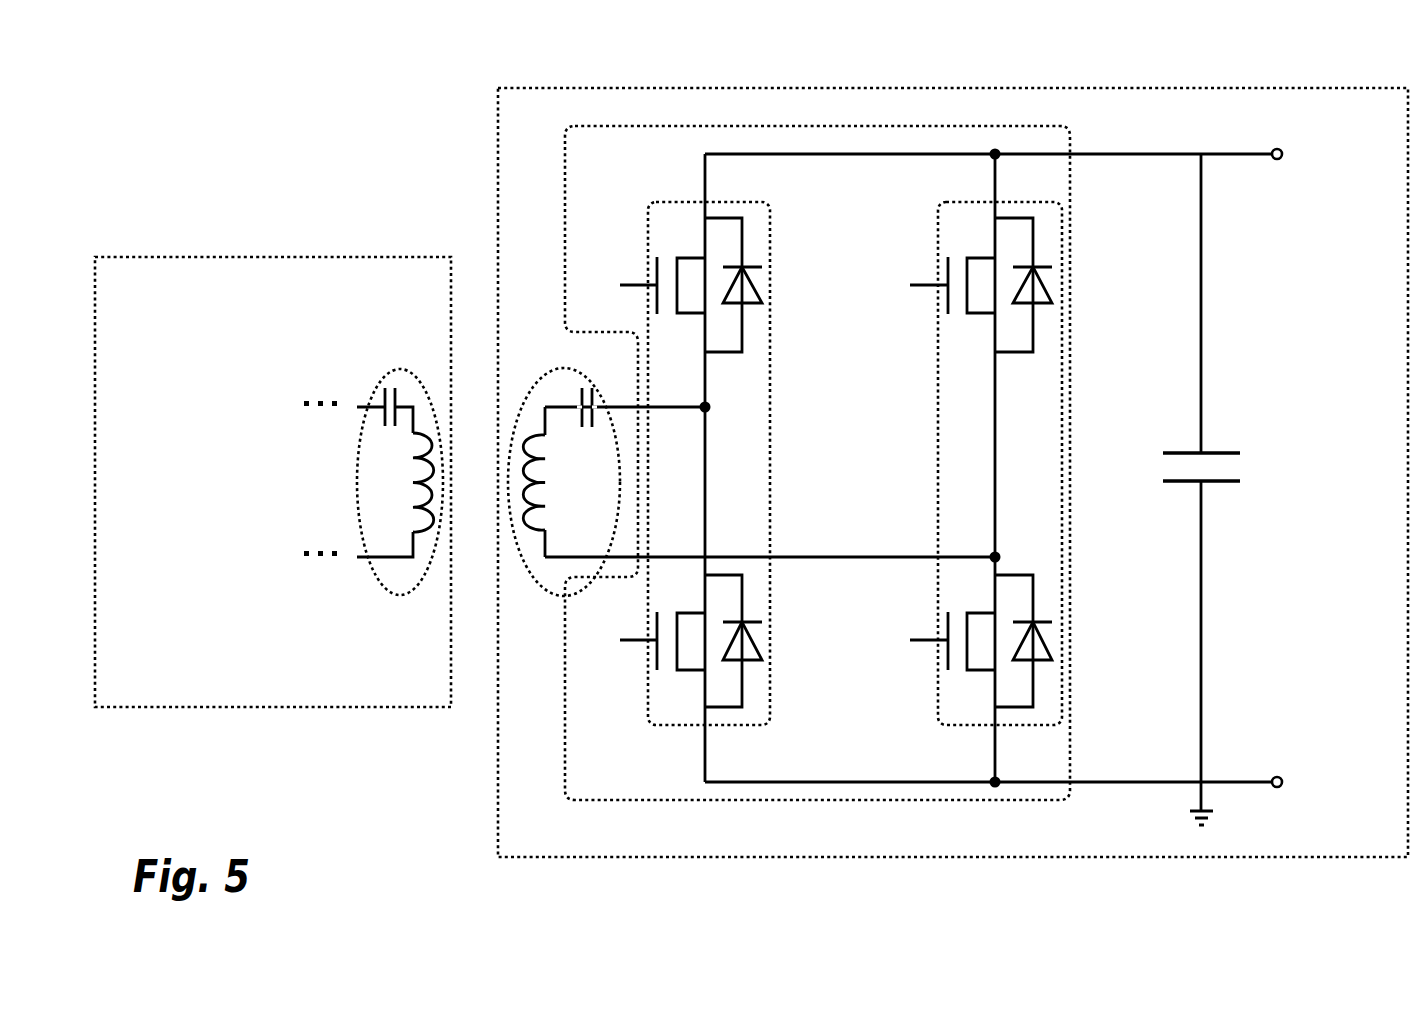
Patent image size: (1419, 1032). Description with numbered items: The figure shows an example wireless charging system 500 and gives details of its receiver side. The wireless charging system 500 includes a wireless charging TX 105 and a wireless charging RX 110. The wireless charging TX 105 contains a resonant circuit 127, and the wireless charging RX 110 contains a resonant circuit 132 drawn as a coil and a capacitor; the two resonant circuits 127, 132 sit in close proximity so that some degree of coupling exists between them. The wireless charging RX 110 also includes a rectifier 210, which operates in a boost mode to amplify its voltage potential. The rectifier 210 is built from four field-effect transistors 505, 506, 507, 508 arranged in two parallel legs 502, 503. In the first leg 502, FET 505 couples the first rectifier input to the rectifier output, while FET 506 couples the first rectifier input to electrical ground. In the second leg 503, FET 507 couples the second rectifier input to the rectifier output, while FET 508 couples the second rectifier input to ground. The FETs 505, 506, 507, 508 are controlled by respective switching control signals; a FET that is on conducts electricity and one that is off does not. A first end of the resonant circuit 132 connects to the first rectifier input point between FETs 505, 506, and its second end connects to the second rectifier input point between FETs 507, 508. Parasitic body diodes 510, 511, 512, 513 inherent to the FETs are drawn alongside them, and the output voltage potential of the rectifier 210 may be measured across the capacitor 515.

The wireless charging system 500 is at (220, 68).
The wireless charging TX 105 is at (170, 257).
The resonant circuit 127 is at (358, 510).
The wireless charging RX 110 is at (658, 88).
The resonant circuit 132 is at (620, 482).
The rectifier 210 is at (735, 126).
The first leg 502 is at (770, 380).
The second leg 503 is at (938, 435).
The FET 505 is at (655, 268).
The FET 506 is at (655, 625).
The FET 507 is at (945, 268).
The FET 508 is at (945, 625).
The parasitic body diode 510 is at (762, 303).
The parasitic body diode 511 is at (762, 660).
The parasitic body diode 512 is at (1051, 303).
The parasitic body diode 513 is at (1051, 660).
The capacitor 515 is at (1185, 453).